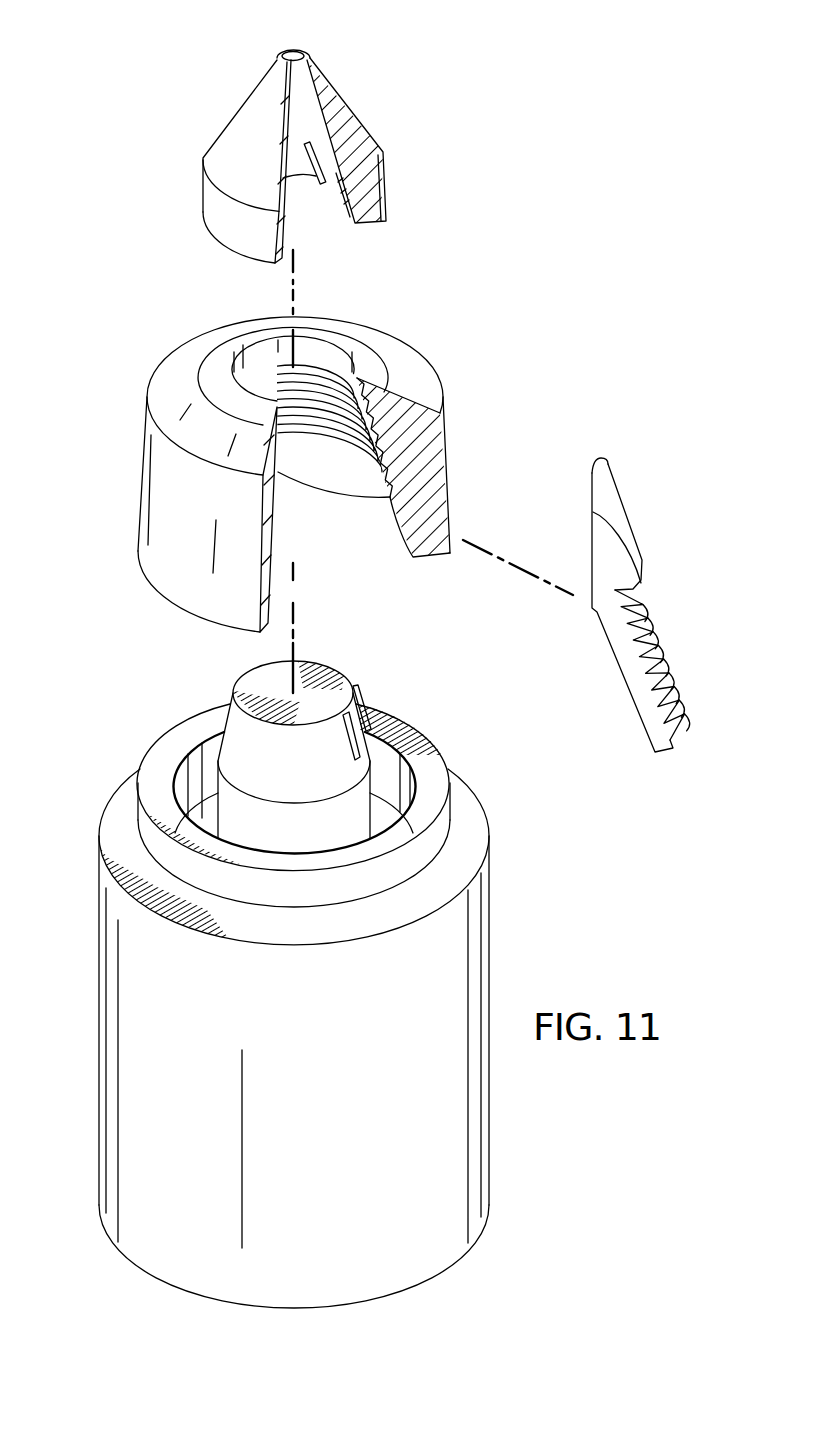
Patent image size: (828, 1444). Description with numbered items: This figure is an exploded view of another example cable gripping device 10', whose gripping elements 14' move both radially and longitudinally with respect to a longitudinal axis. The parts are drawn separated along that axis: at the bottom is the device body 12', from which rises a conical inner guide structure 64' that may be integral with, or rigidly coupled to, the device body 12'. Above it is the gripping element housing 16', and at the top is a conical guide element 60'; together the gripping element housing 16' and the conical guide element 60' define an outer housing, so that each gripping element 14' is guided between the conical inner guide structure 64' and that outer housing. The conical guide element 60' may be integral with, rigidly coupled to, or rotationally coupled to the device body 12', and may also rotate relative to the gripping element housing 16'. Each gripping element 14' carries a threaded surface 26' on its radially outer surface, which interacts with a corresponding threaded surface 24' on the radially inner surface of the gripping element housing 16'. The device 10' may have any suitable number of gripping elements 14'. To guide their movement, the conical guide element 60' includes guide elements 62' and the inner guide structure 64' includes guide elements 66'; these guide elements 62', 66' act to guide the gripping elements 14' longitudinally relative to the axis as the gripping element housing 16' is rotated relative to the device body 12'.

The cable gripping device 10' is at (596, 239).
The device body 12' is at (263, 1001).
The gripping element 14' is at (643, 605).
The gripping element housing 16' is at (294, 469).
The threaded surface 24' is at (293, 450).
The threaded surface 26' is at (669, 664).
The conical guide element 60' is at (282, 156).
The guide element 62' is at (323, 194).
The conical inner guide structure 64' is at (275, 742).
The guide element 66' is at (386, 709).